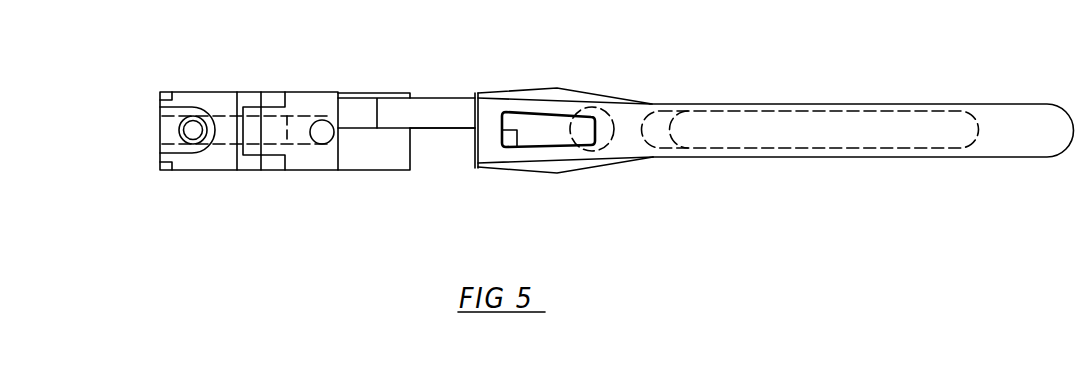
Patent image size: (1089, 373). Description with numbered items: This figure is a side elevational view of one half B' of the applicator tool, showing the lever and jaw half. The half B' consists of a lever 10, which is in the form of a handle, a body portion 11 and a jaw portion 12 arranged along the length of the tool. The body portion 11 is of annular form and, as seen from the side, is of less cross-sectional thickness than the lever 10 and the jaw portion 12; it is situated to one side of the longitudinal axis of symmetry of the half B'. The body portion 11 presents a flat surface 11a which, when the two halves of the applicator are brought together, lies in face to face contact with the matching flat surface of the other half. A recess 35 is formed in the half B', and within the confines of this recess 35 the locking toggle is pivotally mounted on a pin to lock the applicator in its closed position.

The jaw portion 12 is at (227, 95).
The body portion 11 is at (438, 95).
The flat surface 11a is at (458, 130).
The applicator half B' is at (612, 92).
The recess 35 is at (547, 125).
The lever 10 is at (932, 112).